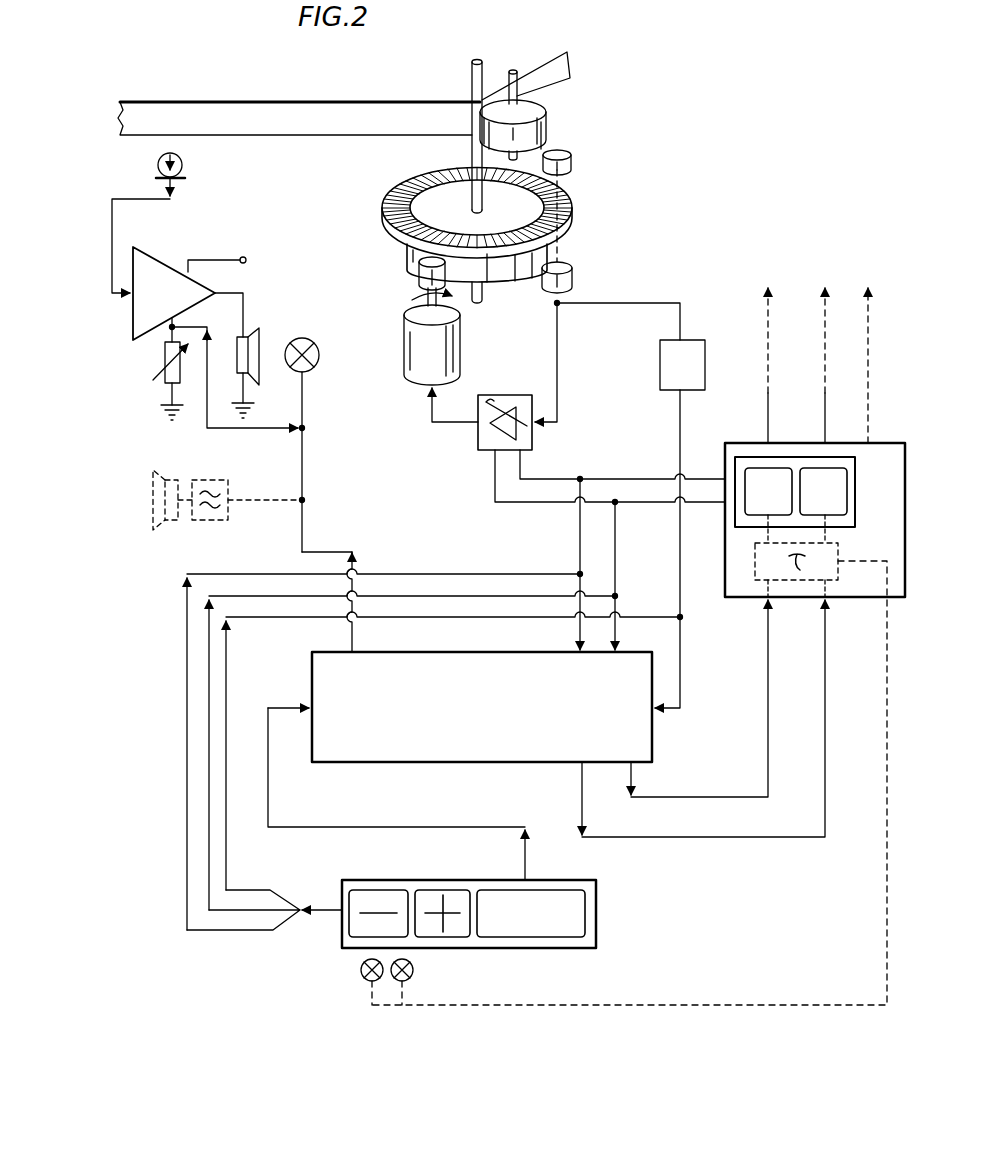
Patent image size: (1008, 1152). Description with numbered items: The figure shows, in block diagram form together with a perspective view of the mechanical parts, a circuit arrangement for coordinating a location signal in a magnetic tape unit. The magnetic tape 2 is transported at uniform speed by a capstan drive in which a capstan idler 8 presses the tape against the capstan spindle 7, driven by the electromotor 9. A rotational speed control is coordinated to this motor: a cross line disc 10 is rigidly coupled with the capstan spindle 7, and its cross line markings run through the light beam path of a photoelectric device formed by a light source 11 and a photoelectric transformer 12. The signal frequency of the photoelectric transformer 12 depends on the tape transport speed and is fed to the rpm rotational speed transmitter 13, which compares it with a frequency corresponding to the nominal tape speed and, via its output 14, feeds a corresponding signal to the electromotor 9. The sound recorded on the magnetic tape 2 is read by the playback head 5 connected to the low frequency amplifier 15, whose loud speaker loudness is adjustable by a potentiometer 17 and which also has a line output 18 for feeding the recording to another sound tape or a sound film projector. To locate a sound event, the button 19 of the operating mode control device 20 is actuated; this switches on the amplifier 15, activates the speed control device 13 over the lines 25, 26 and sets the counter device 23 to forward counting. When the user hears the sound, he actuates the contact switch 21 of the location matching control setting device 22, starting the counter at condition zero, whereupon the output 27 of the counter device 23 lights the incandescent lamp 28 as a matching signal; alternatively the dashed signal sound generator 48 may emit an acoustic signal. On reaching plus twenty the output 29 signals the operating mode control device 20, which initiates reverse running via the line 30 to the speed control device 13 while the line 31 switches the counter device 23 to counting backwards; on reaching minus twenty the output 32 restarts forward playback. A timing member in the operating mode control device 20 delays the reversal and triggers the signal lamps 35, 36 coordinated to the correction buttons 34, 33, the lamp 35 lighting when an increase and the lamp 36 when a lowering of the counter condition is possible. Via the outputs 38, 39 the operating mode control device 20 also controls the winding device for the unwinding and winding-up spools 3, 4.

The magnetic tape 2 is at (344, 93).
The unwinding spool 3 is at (766, 272).
The winding-up spool 4 is at (822, 272).
The playback head 5 is at (160, 223).
The capstan spindle 7 is at (455, 182).
The capstan idler 8 is at (530, 115).
The electromotor 9 is at (443, 321).
The cross line disc 10 is at (496, 225).
The light source 11 is at (576, 163).
The photoelectric transformer 12 is at (576, 238).
The rpm rotational speed transmitter 13 is at (505, 410).
The output of the rpm transmitter 14 is at (494, 379).
The low frequency amplifier 15 is at (506, 345).
The potentiometer 17 is at (216, 373).
The line output 18 is at (259, 335).
The button 19 is at (808, 492).
The operating mode control device 20 is at (815, 520).
The contact switch 21 is at (531, 896).
The location matching control setting device 22 is at (489, 914).
The counter device 23 is at (471, 756).
The line 25 is at (610, 491).
The line 26 is at (631, 575).
The output of the counter device 27 is at (327, 585).
The incandescent lamp 28 is at (313, 438).
The output of the counter device 29 is at (699, 698).
The line 30 is at (622, 463).
The line 31 is at (566, 564).
The output of the counter device 32 is at (703, 718).
The correction button 33 is at (378, 896).
The correction button 34 is at (442, 896).
The signal lamp 35 is at (418, 970).
The signal lamp 36 is at (355, 970).
The output of the operating mode control device 38 is at (748, 365).
The output line 39 is at (806, 365).
The signal sound generator 48 is at (229, 492).